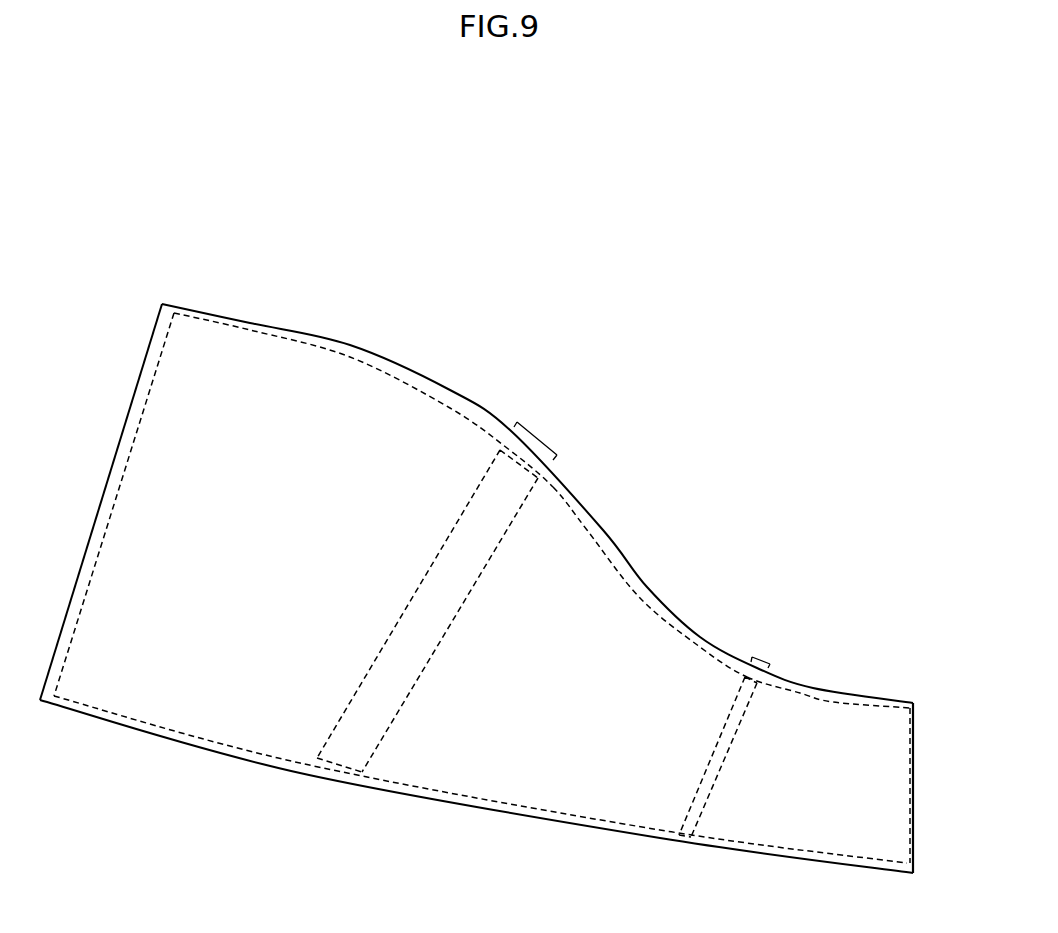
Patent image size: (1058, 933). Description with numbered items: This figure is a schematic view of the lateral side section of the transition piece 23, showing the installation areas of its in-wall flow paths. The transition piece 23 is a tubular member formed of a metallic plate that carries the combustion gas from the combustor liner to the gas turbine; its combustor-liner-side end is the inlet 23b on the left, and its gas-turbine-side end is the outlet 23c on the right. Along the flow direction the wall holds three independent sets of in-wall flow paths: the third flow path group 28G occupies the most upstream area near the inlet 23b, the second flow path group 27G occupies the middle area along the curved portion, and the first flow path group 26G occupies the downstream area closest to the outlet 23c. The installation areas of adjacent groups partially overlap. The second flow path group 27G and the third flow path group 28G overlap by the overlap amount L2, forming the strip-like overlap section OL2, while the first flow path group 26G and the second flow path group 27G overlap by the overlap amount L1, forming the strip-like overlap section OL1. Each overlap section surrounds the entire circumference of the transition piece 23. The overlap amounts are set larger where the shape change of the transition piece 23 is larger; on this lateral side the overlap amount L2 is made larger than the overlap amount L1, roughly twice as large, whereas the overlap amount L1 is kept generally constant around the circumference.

The transition piece 23 is at (508, 353).
The inlet 23b is at (98, 502).
The outlet 23c is at (915, 794).
The third flow path group 28G is at (338, 358).
The second flow path group 27G is at (646, 600).
The first flow path group 26G is at (840, 702).
The overlap section OL2 is at (540, 437).
The overlap section OL1 is at (760, 657).
The overlap amount L2 is at (493, 653).
The overlap amount L1 is at (762, 790).